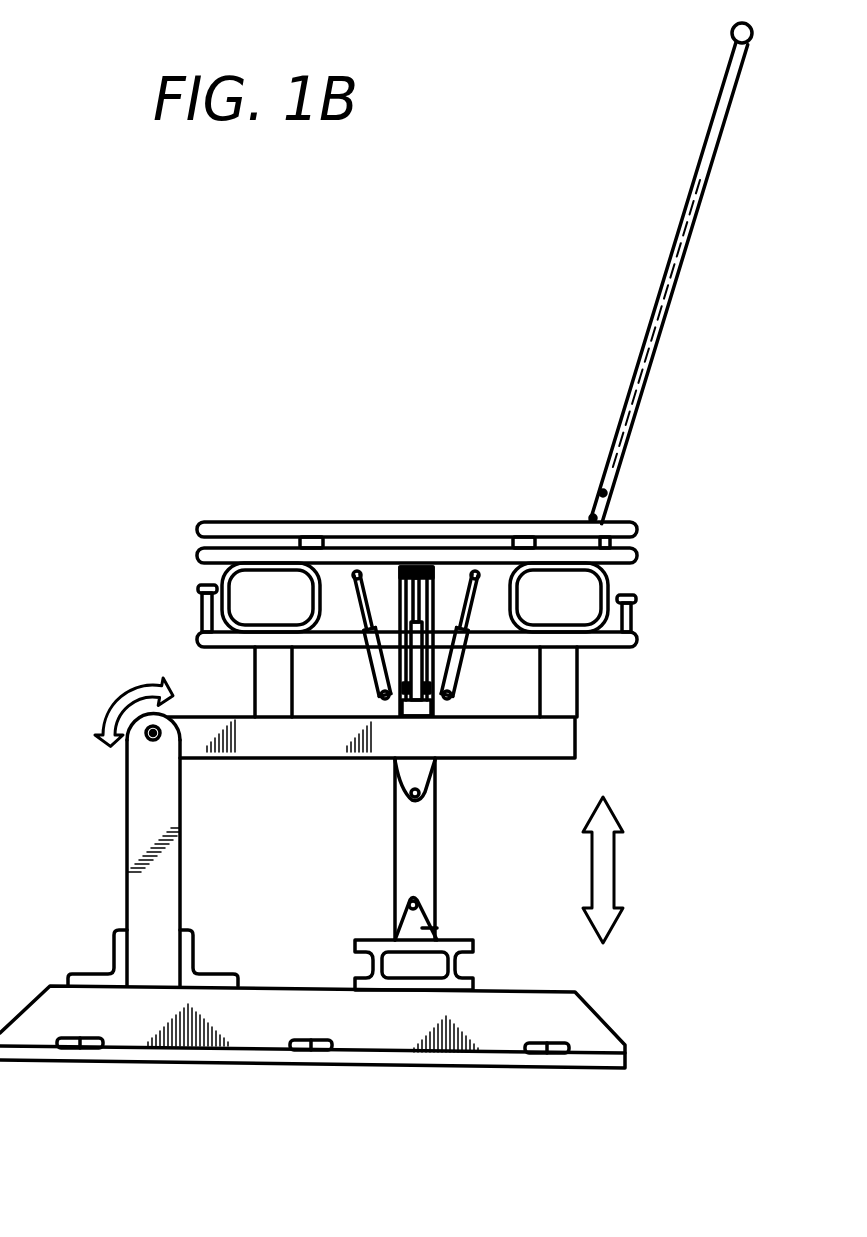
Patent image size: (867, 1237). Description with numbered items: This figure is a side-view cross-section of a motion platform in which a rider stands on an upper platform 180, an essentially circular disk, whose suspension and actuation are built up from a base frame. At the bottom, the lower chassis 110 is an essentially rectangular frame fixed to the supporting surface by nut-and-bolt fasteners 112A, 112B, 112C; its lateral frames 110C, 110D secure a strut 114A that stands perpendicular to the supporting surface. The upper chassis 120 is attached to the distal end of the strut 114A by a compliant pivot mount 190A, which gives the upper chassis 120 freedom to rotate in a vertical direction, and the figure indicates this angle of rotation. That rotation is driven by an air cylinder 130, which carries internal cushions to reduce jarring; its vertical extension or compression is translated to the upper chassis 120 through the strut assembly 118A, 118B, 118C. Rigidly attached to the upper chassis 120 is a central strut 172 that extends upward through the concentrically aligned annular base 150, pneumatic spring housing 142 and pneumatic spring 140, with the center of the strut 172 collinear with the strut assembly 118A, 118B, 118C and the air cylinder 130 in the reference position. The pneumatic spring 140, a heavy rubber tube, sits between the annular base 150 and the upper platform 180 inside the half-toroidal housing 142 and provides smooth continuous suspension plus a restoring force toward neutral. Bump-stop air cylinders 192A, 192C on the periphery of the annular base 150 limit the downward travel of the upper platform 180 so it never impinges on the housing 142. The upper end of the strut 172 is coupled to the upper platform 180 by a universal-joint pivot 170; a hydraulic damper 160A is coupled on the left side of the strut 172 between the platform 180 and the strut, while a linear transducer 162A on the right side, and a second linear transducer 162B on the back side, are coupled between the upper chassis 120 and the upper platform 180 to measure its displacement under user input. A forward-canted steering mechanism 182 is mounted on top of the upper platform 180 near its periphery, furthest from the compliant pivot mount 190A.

The lower chassis 110 is at (612, 1032).
The lateral frame 110C is at (118, 942).
The lateral frame 110D is at (195, 948).
The fastener 112A is at (78, 1052).
The fastener 112B is at (308, 1060).
The fastener 112C is at (548, 1065).
The strut 114A is at (124, 820).
The strut assembly 118A is at (395, 775).
The strut assembly 118B is at (400, 830).
The strut assembly 118C is at (435, 925).
The upper chassis 120 is at (563, 745).
The air cylinder 130 is at (474, 968).
The pneumatic spring 140 is at (200, 565).
The pneumatic spring housing 142 is at (592, 650).
The annular base 150 is at (628, 650).
The hydraulic damper 160A is at (372, 652).
The linear transducer 162A is at (466, 655).
The linear transducer 162B is at (452, 703).
The universal-joint pivot 170 is at (417, 567).
The strut 172 is at (388, 680).
The upper platform 180 is at (645, 517).
The steering mechanism 182 is at (672, 236).
The compliant pivot mount 190A is at (142, 752).
The bump-stop air cylinder 192A is at (198, 598).
The bump-stop air cylinder 192C is at (640, 612).